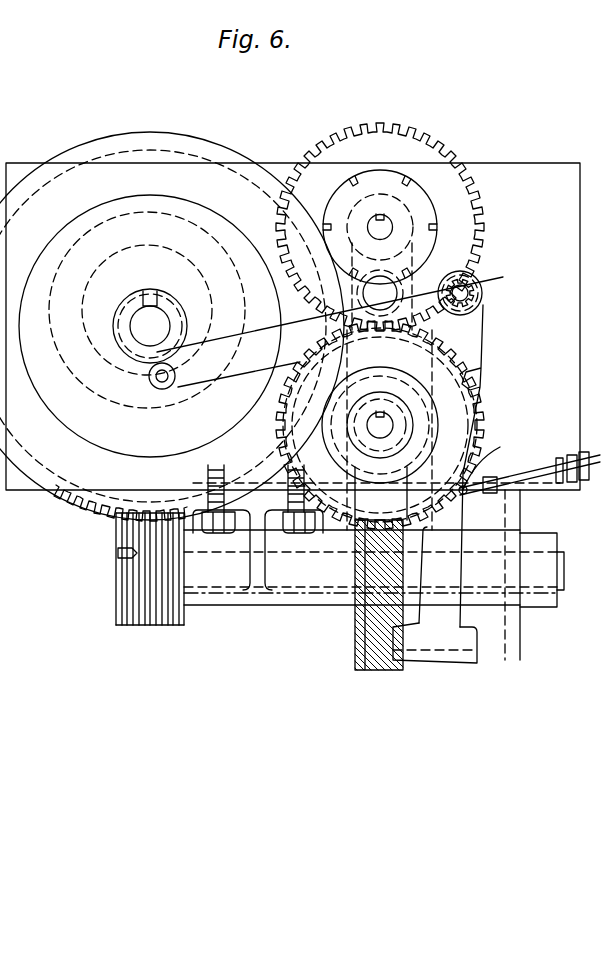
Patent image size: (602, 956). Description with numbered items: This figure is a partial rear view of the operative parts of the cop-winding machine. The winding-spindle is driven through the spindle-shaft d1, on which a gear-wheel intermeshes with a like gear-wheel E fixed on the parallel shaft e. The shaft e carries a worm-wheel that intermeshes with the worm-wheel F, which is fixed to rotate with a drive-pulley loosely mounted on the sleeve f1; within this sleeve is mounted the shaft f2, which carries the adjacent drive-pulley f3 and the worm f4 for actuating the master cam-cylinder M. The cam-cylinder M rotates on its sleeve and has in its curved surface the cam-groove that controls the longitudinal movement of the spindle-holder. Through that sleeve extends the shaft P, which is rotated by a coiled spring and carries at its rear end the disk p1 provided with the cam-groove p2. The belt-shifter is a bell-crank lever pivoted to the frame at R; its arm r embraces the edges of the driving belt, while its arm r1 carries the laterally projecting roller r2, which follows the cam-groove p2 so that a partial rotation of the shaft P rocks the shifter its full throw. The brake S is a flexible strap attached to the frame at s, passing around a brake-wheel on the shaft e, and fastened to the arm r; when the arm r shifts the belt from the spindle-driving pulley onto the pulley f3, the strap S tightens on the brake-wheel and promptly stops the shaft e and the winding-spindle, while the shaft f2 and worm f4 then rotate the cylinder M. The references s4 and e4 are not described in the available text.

The spindle-shaft d1 is at (462, 197).
The pivot of belt-shifter R is at (479, 293).
The shaft P is at (150, 326).
The disk p1 is at (147, 339).
The cam-groove p2 is at (147, 310).
The arm of belt-shifting lever r1 is at (330, 332).
The roller r2 is at (173, 380).
The pawl s4 is at (480, 372).
The gear-wheel E is at (480, 400).
The hub e4 is at (427, 415).
The shaft e is at (387, 427).
The brake S is at (490, 462).
The attachment point of brake strap s is at (558, 459).
The master cam-cylinder M is at (83, 508).
The worm f4 is at (157, 628).
The shaft f2 is at (218, 573).
The sleeve f1 is at (343, 593).
The worm-wheel F is at (353, 657).
The arm of belt-shifting lever r is at (441, 550).
The drive-pulley f3 is at (503, 655).